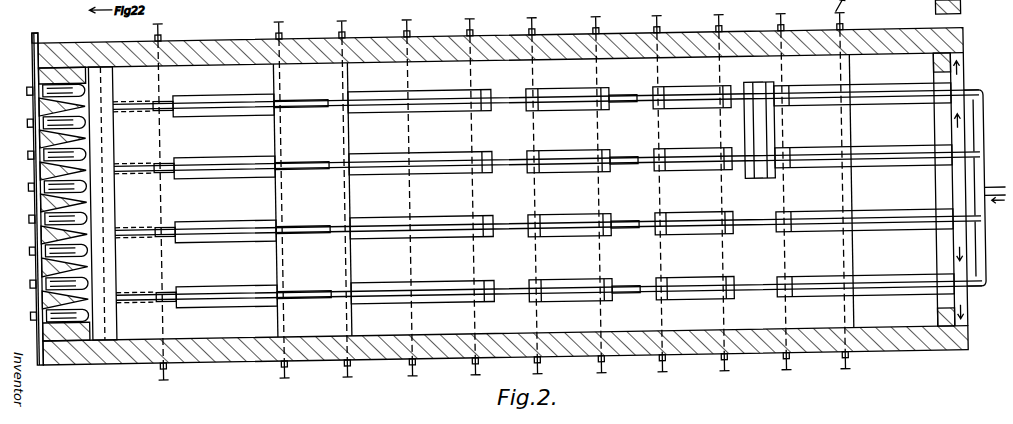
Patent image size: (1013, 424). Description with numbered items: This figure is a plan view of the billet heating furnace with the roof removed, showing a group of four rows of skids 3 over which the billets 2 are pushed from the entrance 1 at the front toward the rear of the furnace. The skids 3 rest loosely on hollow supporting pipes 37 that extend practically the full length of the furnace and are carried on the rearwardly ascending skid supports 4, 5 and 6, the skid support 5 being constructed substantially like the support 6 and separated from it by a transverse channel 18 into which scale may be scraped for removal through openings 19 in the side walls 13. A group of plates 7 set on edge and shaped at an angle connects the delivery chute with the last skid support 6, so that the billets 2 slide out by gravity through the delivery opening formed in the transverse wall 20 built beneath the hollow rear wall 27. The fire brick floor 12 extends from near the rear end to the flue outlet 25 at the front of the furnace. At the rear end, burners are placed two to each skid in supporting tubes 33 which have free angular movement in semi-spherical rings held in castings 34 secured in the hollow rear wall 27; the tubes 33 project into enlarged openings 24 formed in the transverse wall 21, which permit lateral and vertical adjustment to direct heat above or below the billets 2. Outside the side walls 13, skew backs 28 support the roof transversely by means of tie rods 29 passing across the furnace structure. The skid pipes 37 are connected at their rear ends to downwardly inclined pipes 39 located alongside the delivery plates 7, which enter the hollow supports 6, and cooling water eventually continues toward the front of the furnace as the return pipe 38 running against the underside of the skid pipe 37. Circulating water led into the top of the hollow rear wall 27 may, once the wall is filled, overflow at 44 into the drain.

The entrance 1 is at (933, 89).
The billets 2 is at (756, 94).
The skids 3 is at (323, 111).
The skid support 4 is at (530, 120).
The skid support 5 is at (435, 97).
The skid support 6 is at (227, 98).
The plates 7 is at (143, 111).
The fire brick floor 12 is at (281, 200).
The side walls 13 is at (395, 64).
The transverse channel 18 is at (281, 122).
The openings 19 is at (298, 66).
The transverse wall 20 is at (106, 207).
The transverse wall 21 is at (84, 66).
The enlarged openings 24 is at (85, 100).
The flue outlet 25 is at (850, 146).
The hollow rear wall 27 is at (32, 142).
The skew backs 28 is at (165, 31).
The tie rods 29 is at (410, 125).
The supporting tubes 33 is at (27, 184).
The castings 34 is at (30, 89).
The pipe 37 is at (973, 170).
The return pipe 38 is at (966, 97).
The downwardly inclined pipes 39 is at (160, 113).
The overflow 44 is at (32, 36).